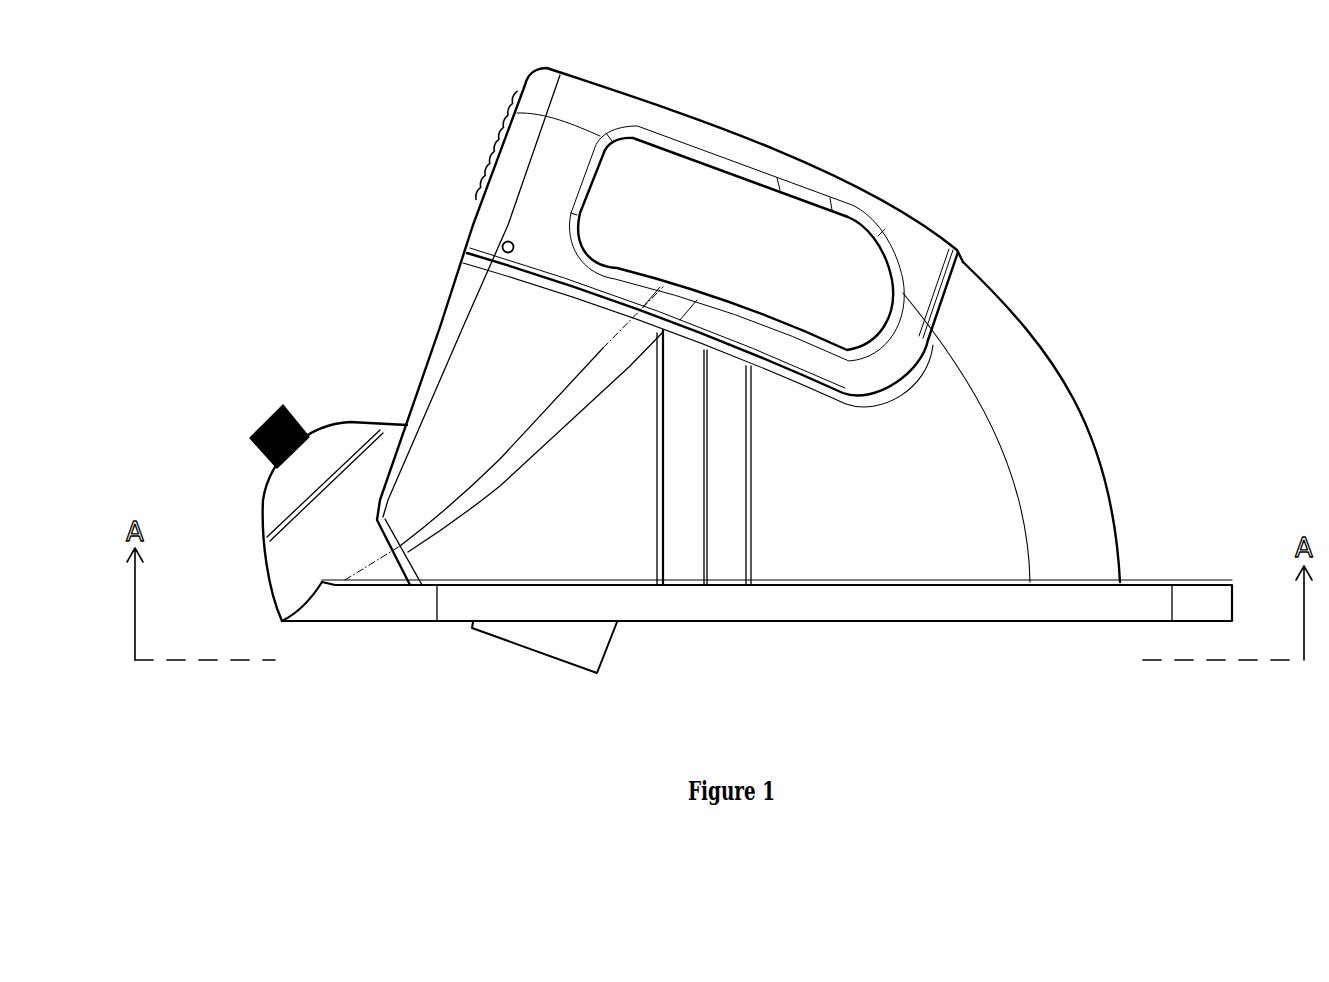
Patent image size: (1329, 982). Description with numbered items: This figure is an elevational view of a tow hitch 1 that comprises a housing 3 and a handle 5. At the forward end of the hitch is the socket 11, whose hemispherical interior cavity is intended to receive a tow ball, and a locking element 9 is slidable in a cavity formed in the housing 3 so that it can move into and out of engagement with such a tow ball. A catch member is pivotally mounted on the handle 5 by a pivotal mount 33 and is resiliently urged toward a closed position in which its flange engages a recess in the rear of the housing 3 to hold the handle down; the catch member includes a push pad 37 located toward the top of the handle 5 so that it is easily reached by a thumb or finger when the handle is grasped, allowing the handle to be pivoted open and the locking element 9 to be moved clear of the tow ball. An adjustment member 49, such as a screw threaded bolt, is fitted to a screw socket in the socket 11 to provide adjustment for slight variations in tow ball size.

The tow hitch 1 is at (1103, 413).
The housing 3 is at (1033, 364).
The handle 5 is at (850, 195).
The locking element 9 is at (610, 645).
The socket 11 is at (267, 533).
The pivotal mount 33 is at (502, 247).
The push pad 37 is at (497, 151).
The adjustment member 49 is at (262, 423).